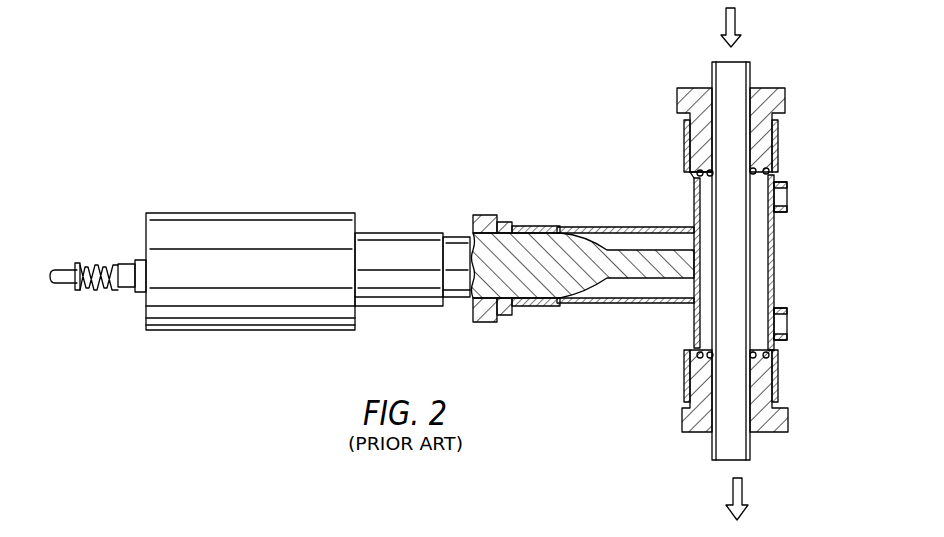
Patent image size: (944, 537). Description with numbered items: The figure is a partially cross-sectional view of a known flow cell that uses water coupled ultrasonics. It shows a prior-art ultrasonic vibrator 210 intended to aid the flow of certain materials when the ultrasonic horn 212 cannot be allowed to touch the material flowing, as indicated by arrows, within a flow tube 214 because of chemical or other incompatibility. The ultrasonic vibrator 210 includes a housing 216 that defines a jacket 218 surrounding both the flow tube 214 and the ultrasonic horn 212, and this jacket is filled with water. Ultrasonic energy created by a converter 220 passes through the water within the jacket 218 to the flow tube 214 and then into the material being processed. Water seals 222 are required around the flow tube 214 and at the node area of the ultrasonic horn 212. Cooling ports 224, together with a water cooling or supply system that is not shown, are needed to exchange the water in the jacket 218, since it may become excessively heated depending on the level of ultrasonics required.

The ultrasonic vibrator 210 is at (426, 218).
The ultrasonic horn 212 is at (597, 245).
The flow tube 214 is at (712, 80).
The housing 216 is at (645, 305).
The jacket 218 is at (651, 243).
The converter 220 is at (240, 225).
The water seals 222 is at (556, 227).
The cooling ports 224 is at (782, 212).